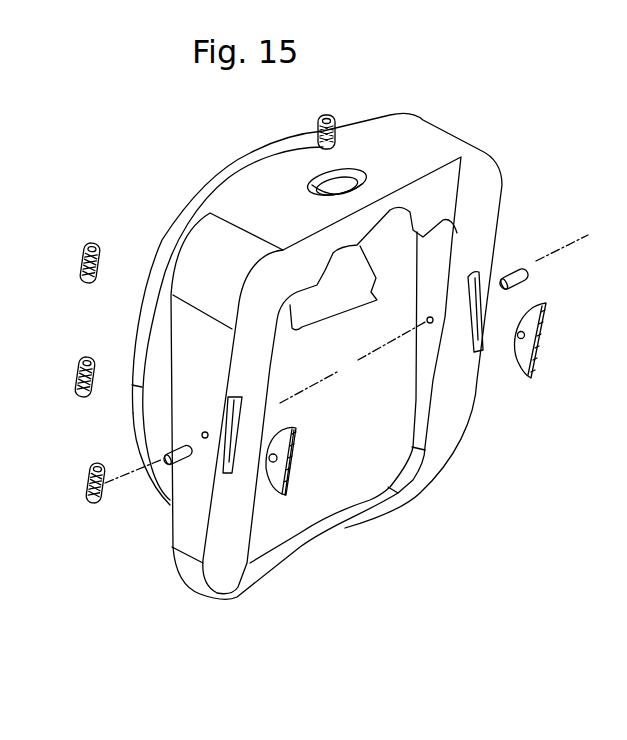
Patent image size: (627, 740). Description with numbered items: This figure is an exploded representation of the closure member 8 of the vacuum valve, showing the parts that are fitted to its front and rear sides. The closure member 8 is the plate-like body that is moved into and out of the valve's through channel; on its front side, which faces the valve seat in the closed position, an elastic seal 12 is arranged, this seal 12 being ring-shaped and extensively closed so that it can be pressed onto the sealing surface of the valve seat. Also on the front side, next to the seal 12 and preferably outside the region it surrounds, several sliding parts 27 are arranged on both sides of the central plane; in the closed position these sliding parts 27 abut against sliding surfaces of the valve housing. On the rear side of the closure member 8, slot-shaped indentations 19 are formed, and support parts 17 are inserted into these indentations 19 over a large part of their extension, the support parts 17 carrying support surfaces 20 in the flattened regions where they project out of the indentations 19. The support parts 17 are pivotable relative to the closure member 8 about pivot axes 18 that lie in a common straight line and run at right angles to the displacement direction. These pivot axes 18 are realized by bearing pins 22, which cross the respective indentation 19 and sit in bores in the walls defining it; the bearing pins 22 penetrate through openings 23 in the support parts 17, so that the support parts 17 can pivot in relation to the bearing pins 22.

The closure member 8 is at (475, 175).
The elastic seal 12 is at (237, 163).
The support parts 17 is at (285, 480).
The pivot axes 18 is at (375, 352).
The slot-shaped indentations 19 is at (232, 405).
The support surfaces 20 is at (296, 468).
The bearing pins 22 is at (165, 460).
The openings 23 is at (272, 460).
The sliding parts 27 is at (330, 122).